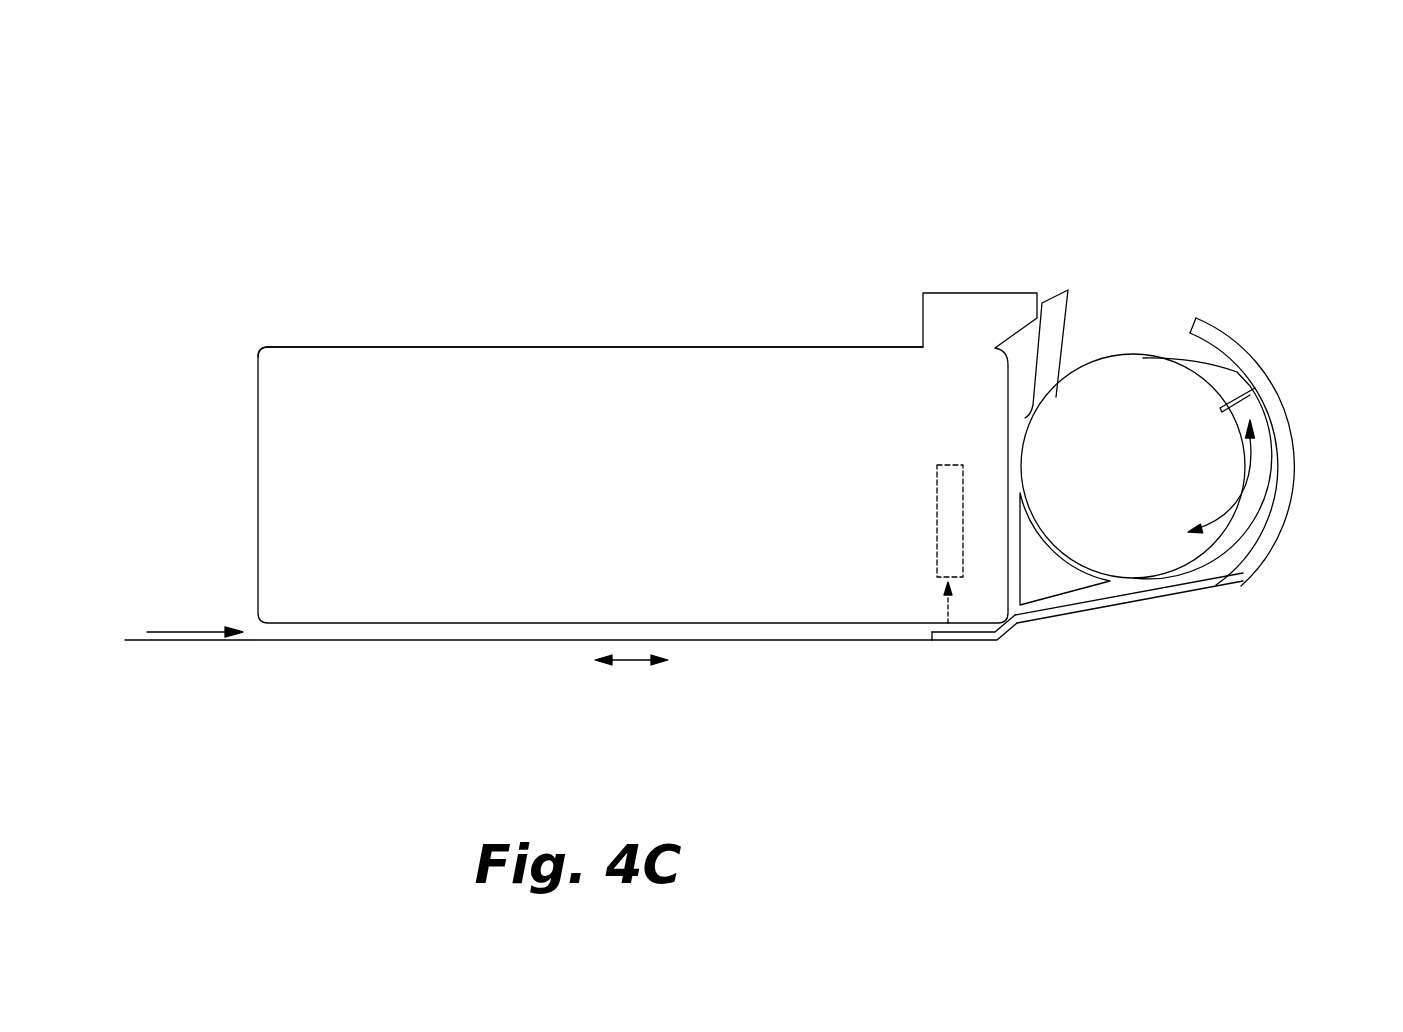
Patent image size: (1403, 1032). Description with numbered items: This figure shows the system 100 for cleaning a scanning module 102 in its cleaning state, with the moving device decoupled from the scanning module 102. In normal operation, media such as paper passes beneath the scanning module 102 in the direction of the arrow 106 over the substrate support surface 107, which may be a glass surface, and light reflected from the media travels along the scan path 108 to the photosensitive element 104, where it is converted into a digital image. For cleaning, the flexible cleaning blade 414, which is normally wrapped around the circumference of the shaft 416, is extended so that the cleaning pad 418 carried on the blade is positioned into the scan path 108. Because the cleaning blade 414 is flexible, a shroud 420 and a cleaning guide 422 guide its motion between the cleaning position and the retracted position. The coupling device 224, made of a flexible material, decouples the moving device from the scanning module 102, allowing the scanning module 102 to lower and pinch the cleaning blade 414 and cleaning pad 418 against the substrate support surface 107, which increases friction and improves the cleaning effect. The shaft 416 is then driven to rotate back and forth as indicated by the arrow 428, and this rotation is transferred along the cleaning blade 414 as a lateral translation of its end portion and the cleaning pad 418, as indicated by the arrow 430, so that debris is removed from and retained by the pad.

The system 100 is at (383, 143).
The scanning module 102 is at (765, 345).
The photosensitive element 104 is at (930, 558).
The arrow 106 is at (200, 630).
The substrate support surface 107 is at (463, 641).
The scan path 108 is at (932, 624).
The coupling device 224 is at (1038, 348).
The flexible cleaning blade 414 is at (1105, 595).
The shaft 416 is at (1202, 545).
The cleaning pad 418 is at (1028, 618).
The shroud 420 is at (1287, 502).
The cleaning guide 422 is at (1040, 573).
The arrow 428 is at (1252, 459).
The arrow 430 is at (618, 663).